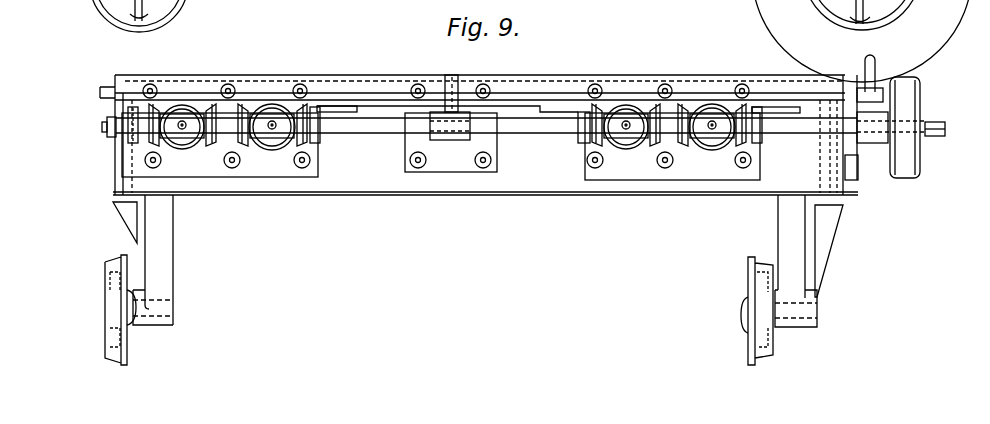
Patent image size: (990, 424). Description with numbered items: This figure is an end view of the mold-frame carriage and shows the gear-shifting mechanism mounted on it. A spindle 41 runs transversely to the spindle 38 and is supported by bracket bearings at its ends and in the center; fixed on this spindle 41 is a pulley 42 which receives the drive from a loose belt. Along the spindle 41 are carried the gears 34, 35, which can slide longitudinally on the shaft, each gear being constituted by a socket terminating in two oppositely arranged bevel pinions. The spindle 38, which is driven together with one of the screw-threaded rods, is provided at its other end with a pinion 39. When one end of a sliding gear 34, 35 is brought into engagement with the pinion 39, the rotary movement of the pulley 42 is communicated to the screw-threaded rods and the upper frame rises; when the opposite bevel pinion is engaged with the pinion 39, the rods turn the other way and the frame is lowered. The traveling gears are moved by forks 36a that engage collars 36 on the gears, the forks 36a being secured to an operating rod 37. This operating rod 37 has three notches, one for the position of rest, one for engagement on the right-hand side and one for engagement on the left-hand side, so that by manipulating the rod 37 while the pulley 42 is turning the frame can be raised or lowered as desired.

The gear 34 is at (200, 131).
The gear 35 is at (287, 130).
The collar 36 is at (293, 104).
The fork 36a is at (143, 100).
The operating rod 37 is at (876, 92).
The spindle 38 is at (174, 117).
The pinion 39 is at (202, 106).
The spindle 41 is at (358, 124).
The pulley 42 is at (907, 90).